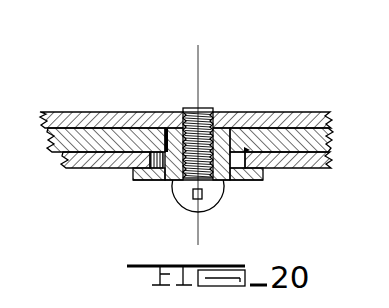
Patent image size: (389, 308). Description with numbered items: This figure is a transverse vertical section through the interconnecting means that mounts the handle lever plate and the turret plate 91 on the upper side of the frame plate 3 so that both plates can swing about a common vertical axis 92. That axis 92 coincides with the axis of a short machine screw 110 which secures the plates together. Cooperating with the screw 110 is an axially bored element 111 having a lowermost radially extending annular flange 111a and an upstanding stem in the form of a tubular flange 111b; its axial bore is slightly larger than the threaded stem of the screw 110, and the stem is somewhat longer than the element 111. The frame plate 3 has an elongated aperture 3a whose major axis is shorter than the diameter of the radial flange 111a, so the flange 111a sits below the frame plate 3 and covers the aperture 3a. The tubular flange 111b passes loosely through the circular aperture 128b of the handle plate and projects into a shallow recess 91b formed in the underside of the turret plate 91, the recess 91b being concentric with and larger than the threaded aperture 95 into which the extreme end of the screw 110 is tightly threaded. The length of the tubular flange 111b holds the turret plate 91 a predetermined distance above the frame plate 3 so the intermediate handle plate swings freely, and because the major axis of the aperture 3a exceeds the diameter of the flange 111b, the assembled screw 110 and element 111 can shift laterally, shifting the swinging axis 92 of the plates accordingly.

The frame plate 3 is at (305, 162).
The elongated aperture 3a is at (243, 181).
The turret plate 91 is at (238, 110).
The shallow recess 91b is at (155, 110).
The vertical axis 92 is at (207, 108).
The threaded aperture 95 is at (180, 110).
The machine screw 110 is at (207, 188).
The axially bored element 111 is at (262, 182).
The radially extending annular flange 111a is at (152, 179).
The tubular flange 111b is at (163, 181).
The circular aperture 128b is at (143, 110).